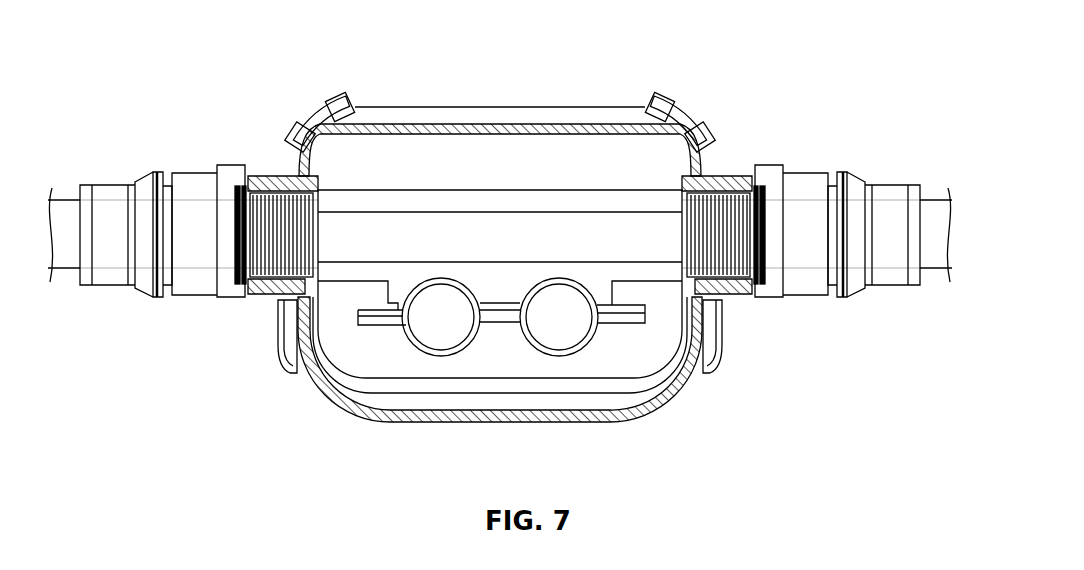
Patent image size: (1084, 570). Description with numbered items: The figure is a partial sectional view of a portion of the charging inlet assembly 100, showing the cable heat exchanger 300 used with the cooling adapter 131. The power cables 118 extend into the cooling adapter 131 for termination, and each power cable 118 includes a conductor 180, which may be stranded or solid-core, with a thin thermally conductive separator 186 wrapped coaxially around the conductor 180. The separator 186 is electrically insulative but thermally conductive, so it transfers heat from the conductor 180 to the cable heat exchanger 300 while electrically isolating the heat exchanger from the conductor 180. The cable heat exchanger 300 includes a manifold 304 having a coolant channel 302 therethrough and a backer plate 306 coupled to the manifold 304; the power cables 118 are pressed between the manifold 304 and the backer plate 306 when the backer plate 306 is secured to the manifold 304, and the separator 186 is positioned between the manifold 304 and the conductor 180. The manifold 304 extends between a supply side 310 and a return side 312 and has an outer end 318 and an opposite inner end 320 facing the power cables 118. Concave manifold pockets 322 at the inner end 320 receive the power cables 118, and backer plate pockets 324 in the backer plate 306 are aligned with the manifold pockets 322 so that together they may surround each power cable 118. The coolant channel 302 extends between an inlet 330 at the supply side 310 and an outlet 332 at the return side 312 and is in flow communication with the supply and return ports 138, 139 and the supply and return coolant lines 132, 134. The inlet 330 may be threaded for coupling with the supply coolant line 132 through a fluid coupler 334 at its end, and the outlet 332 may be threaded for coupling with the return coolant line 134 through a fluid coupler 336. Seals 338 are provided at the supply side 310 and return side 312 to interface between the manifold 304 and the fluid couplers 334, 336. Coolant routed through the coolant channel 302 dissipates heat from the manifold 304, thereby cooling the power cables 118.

The charging inlet assembly 100 is at (217, 60).
The power cable 118 is at (551, 334).
The cooling adapter 131 is at (694, 387).
The supply coolant line 132 is at (60, 264).
The return coolant line 134 is at (942, 258).
The supply port 138 is at (106, 218).
The return port 139 is at (888, 214).
The conductor 180 is at (440, 318).
The thermally conductive separator 186 is at (404, 337).
The cable heat exchanger 300 is at (342, 294).
The coolant channel 302 is at (437, 237).
The manifold 304 is at (532, 197).
The backer plate 306 is at (617, 325).
The supply side 310 is at (347, 184).
The return side 312 is at (665, 183).
The outer end 318 is at (487, 190).
The inner end 320 is at (500, 323).
The manifold pocket 322 is at (569, 273).
The backer plate pocket 324 is at (572, 358).
The inlet 330 is at (245, 222).
The outlet 332 is at (762, 218).
The fluid coupler 334 is at (182, 286).
The fluid coupler 336 is at (804, 286).
The seal 338 is at (247, 292).